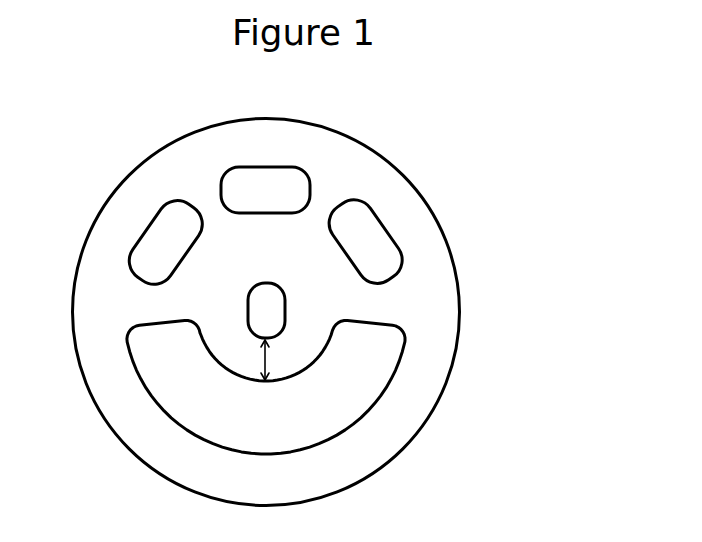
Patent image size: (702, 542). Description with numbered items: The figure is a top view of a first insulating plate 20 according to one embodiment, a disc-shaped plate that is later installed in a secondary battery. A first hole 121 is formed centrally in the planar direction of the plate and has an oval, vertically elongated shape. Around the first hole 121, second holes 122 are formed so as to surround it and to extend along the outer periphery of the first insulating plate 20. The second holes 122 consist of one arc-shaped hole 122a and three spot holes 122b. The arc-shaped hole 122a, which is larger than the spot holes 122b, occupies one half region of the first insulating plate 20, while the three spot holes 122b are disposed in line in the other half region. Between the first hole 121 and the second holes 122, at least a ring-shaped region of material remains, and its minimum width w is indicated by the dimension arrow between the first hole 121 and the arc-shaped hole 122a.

The first insulating plate 20 is at (498, 110).
The first hole 121 is at (277, 326).
The second holes 122 is at (387, 310).
The arc-shaped hole 122a is at (378, 333).
The spot holes 122b is at (373, 237).
The minimum width w is at (258, 347).